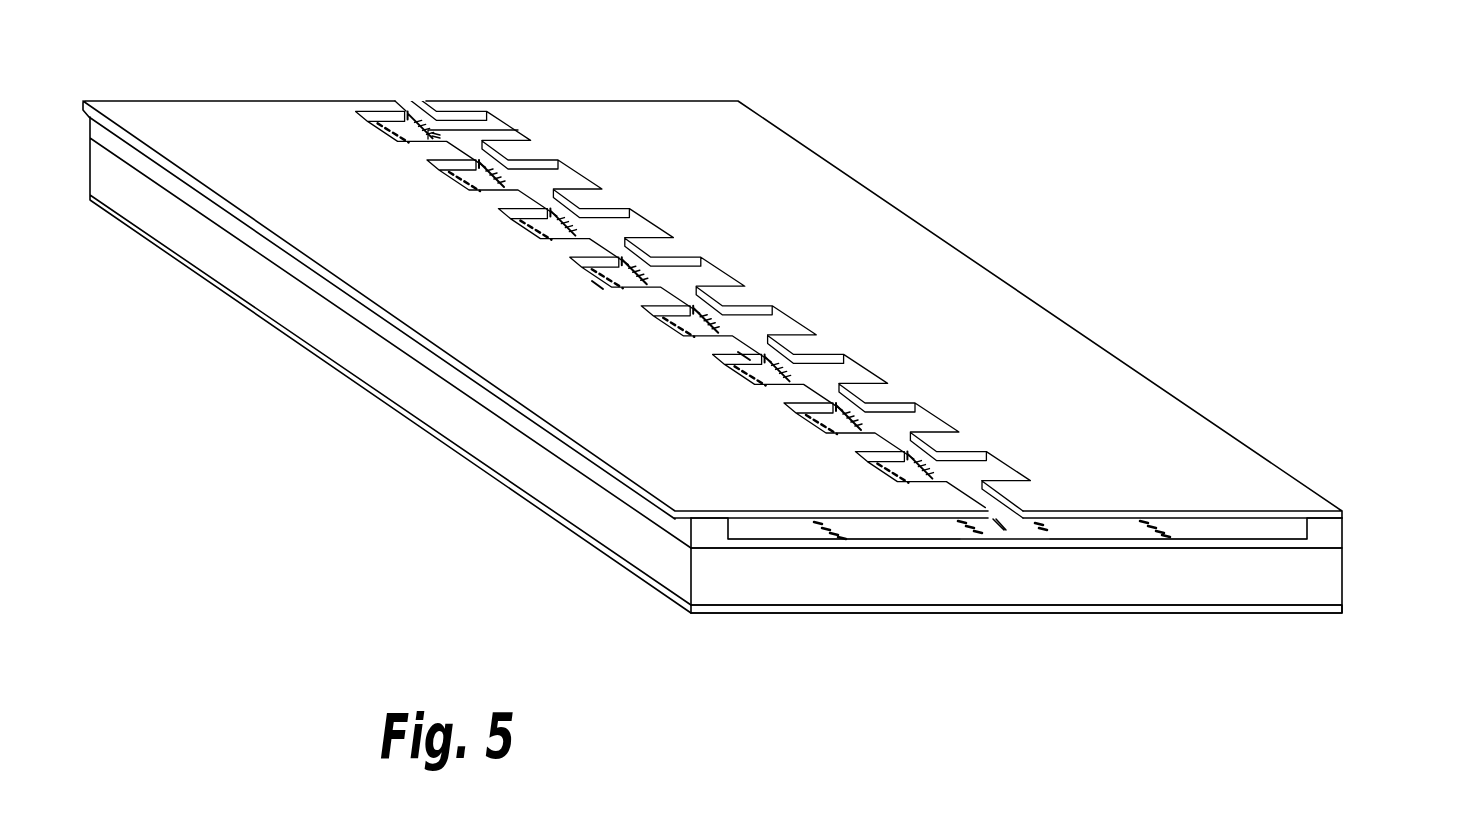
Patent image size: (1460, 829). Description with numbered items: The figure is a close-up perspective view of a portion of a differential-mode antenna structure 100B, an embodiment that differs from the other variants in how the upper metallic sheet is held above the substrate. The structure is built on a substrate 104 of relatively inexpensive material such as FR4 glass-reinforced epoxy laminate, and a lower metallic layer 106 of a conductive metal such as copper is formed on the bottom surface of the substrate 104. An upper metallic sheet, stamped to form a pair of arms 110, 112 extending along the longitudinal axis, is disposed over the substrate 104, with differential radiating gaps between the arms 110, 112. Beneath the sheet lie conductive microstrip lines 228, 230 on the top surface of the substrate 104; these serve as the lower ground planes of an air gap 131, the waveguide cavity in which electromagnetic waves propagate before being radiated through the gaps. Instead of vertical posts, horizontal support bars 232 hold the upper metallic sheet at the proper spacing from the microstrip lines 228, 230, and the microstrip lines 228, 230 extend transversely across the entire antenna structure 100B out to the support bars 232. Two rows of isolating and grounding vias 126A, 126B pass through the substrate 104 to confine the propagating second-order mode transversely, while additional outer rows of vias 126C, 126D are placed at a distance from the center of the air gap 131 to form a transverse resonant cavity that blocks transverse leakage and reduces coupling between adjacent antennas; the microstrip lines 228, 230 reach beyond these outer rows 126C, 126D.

The differential-mode antenna structure 100B is at (415, 85).
The arm of upper metallic sheet 112 is at (975, 265).
The arm of upper metallic sheet 110 is at (420, 335).
The substrate 104 is at (1328, 580).
The lower metallic layer 106 is at (1330, 608).
The horizontal support bar 232 is at (1333, 532).
The isolating and grounding vias 126A is at (590, 282).
The isolating and grounding vias 126B is at (736, 352).
The outer row of isolating vias 126C is at (804, 534).
The outer row of isolating vias 126D is at (1175, 527).
The air gap 131 is at (1031, 528).
The microstrip line 230 is at (903, 549).
The microstrip line 228 is at (1113, 549).